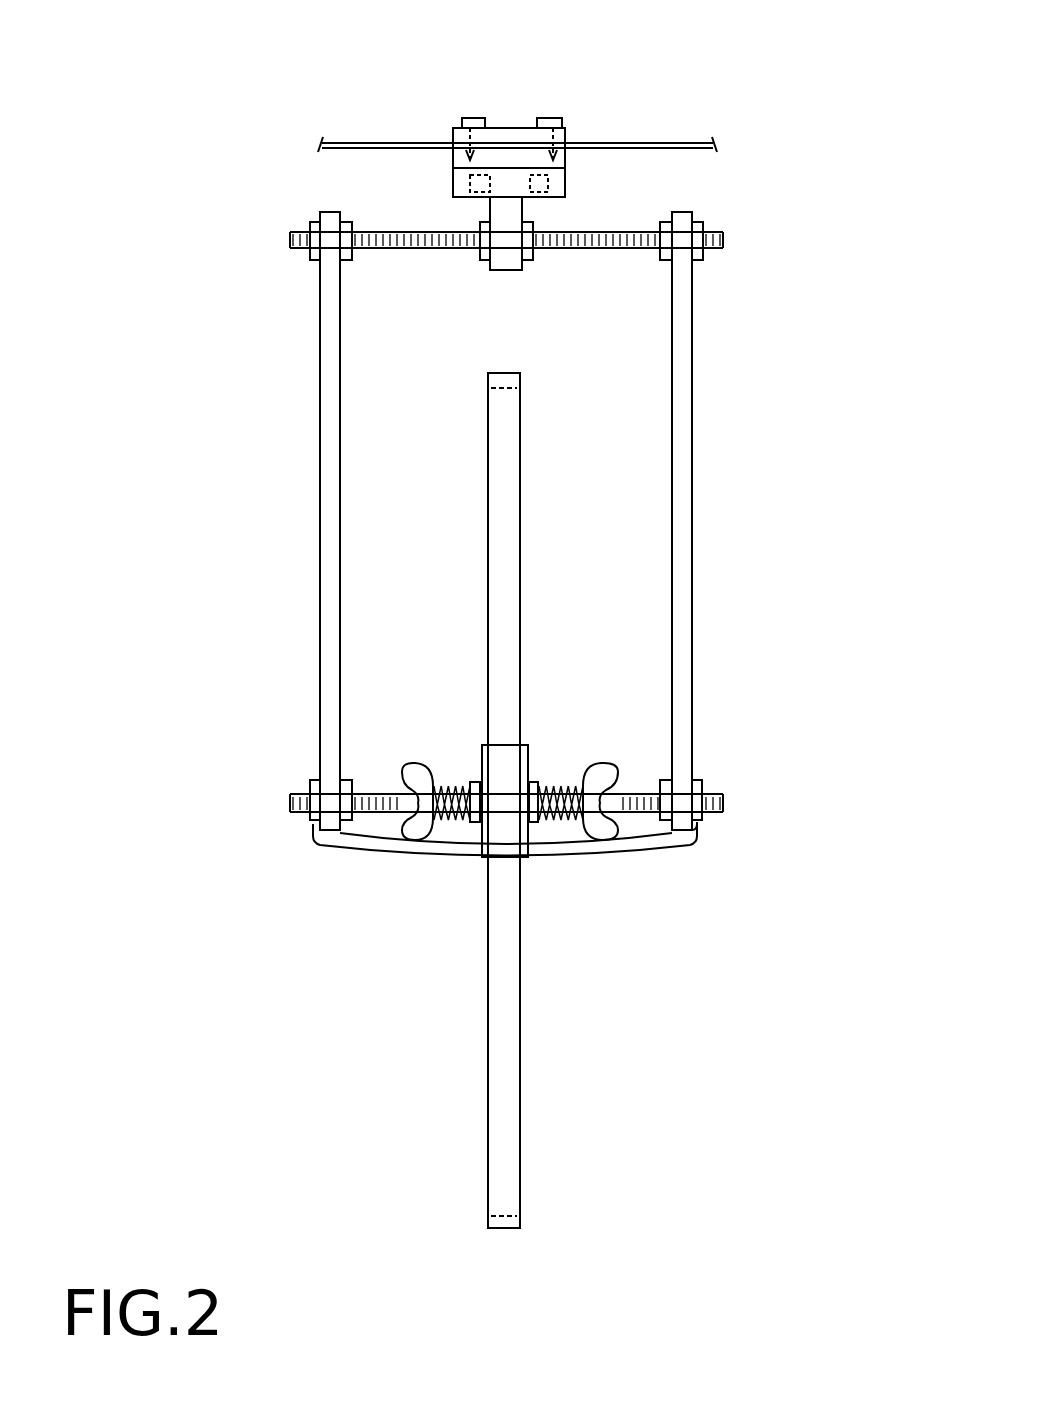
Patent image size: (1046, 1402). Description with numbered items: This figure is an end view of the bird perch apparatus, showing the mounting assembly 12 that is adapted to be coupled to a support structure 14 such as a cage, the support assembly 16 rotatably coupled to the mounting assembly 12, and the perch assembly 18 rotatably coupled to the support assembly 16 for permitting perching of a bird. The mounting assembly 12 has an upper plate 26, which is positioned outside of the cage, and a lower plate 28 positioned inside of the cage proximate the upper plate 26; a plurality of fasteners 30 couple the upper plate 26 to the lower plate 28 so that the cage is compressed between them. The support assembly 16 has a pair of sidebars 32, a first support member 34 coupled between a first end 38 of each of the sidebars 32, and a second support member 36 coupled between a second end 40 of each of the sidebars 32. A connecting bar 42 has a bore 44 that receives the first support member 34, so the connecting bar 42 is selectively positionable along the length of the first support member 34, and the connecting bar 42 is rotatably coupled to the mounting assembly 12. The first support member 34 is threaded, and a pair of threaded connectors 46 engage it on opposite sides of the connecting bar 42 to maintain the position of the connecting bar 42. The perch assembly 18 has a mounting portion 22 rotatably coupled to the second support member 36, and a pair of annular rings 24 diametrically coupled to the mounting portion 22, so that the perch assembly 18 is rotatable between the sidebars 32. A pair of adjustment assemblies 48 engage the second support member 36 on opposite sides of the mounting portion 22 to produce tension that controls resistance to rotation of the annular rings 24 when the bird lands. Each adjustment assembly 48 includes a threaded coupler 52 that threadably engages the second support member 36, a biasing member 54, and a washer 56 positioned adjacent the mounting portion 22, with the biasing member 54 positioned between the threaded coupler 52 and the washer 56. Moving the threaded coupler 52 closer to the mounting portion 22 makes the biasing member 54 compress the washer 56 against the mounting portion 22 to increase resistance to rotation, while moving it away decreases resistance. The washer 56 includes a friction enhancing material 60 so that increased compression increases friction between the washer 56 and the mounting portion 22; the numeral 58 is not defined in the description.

The mounting assembly 12 is at (333, 178).
The support structure 14 is at (642, 142).
The support assembly 16 is at (728, 402).
The perch assembly 18 is at (550, 498).
The mounting portion 22 is at (478, 842).
The annular rings 24 is at (488, 447).
The upper plate 26 is at (495, 128).
The lower plate 28 is at (565, 160).
The fasteners 30 is at (462, 118).
The sidebars 32 is at (320, 316).
The first support member 34 is at (575, 250).
The second support member 36 is at (632, 812).
The first end 38 is at (695, 218).
The second end 40 is at (683, 842).
The connecting bar 42 is at (524, 203).
The bore 44 is at (480, 232).
The threaded connectors 46 is at (350, 260).
The adjustment assemblies 48 is at (600, 683).
The threaded coupler 52 is at (404, 764).
The biasing member 54 is at (550, 812).
The washer 56 is at (543, 782).
The washers 58 is at (563, 775).
The friction enhancing material 60 is at (537, 833).